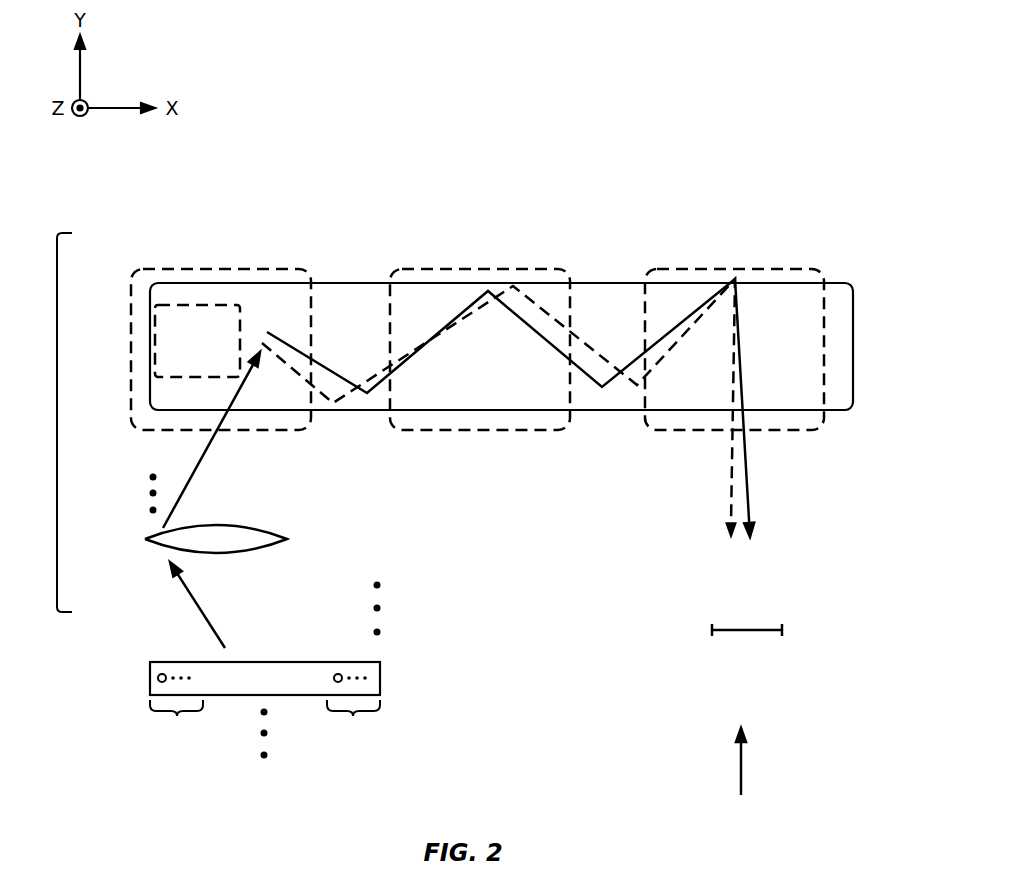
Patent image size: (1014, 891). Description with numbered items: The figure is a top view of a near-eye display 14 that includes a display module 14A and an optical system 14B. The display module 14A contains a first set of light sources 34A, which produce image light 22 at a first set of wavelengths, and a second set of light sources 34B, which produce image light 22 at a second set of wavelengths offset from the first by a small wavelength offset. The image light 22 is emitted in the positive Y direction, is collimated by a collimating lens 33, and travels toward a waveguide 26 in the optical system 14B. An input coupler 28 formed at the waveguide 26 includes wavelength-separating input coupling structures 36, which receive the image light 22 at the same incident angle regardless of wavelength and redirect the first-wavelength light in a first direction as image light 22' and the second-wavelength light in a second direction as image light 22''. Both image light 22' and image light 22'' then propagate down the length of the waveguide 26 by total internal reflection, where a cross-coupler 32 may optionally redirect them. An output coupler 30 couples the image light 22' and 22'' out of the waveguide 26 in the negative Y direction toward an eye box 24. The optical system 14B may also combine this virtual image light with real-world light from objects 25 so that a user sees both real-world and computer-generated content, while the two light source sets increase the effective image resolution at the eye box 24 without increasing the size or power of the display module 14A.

The display 14 is at (628, 125).
The display module 14A is at (150, 675).
The optical system 14B is at (57, 414).
The image light 22 is at (219, 500).
The image light at first set of wavelengths 22' is at (545, 410).
The image light at second set of wavelengths 22'' is at (499, 410).
The eye box 24 is at (750, 633).
The real-world objects 25 is at (741, 760).
The waveguide 26 is at (853, 355).
The input coupler 28 is at (215, 267).
The output coupler 30 is at (728, 267).
The cross-coupler 32 is at (469, 267).
The collimating lens 33 is at (312, 530).
The first set of light sources 34A is at (177, 716).
The second set of light sources 34B is at (353, 716).
The wavelength-separating input coupling structures 36 is at (180, 303).